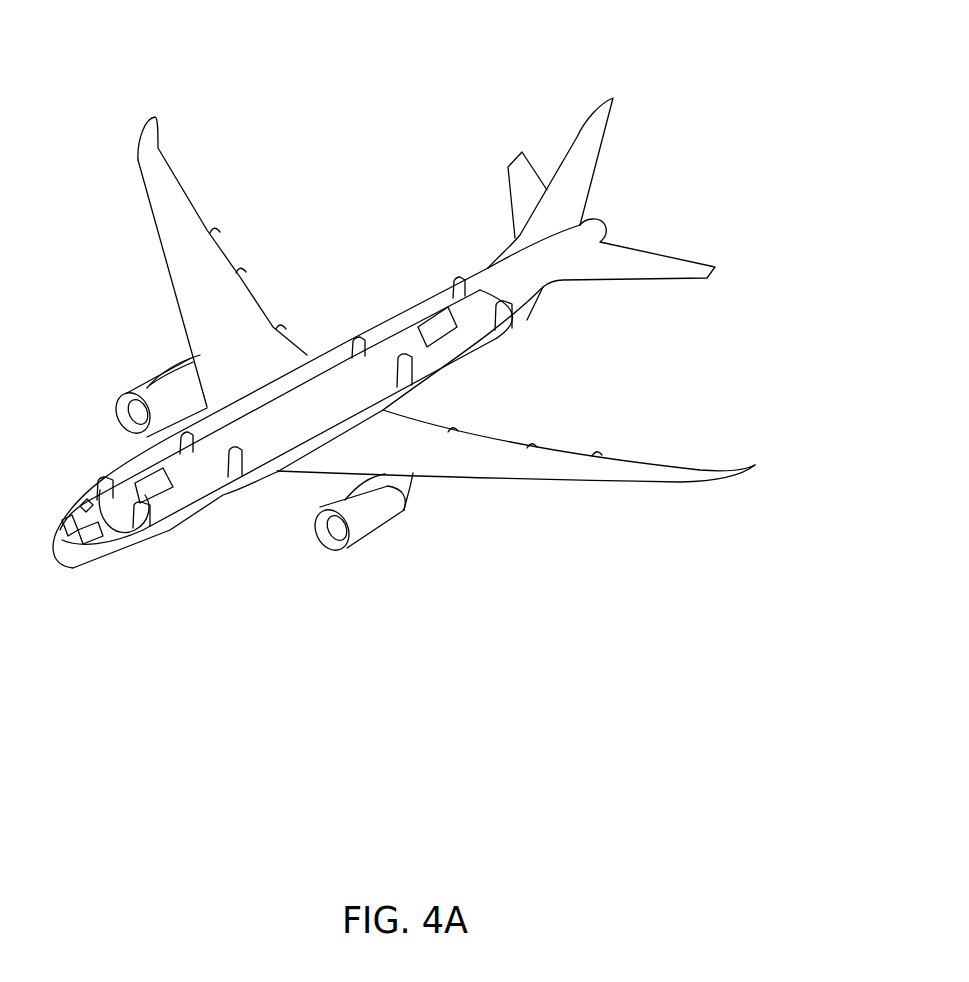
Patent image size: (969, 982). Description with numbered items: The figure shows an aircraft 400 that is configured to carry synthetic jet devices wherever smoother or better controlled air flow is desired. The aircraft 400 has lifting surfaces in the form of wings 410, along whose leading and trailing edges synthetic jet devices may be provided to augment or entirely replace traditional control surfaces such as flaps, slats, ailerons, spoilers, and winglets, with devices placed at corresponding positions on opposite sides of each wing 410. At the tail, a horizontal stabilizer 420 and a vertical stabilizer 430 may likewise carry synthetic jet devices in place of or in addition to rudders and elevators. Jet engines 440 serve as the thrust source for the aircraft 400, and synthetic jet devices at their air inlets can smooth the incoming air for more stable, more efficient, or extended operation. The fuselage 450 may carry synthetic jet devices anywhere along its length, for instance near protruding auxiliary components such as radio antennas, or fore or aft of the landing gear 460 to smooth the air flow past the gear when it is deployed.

The aircraft 400 is at (411, 315).
The wings 410 is at (480, 456).
The horizontal stabilizer 420 is at (616, 256).
The vertical stabilizer 430 is at (586, 166).
The jet engines 440 is at (333, 545).
The fuselage 450 is at (327, 355).
The landing gear 460 is at (118, 568).